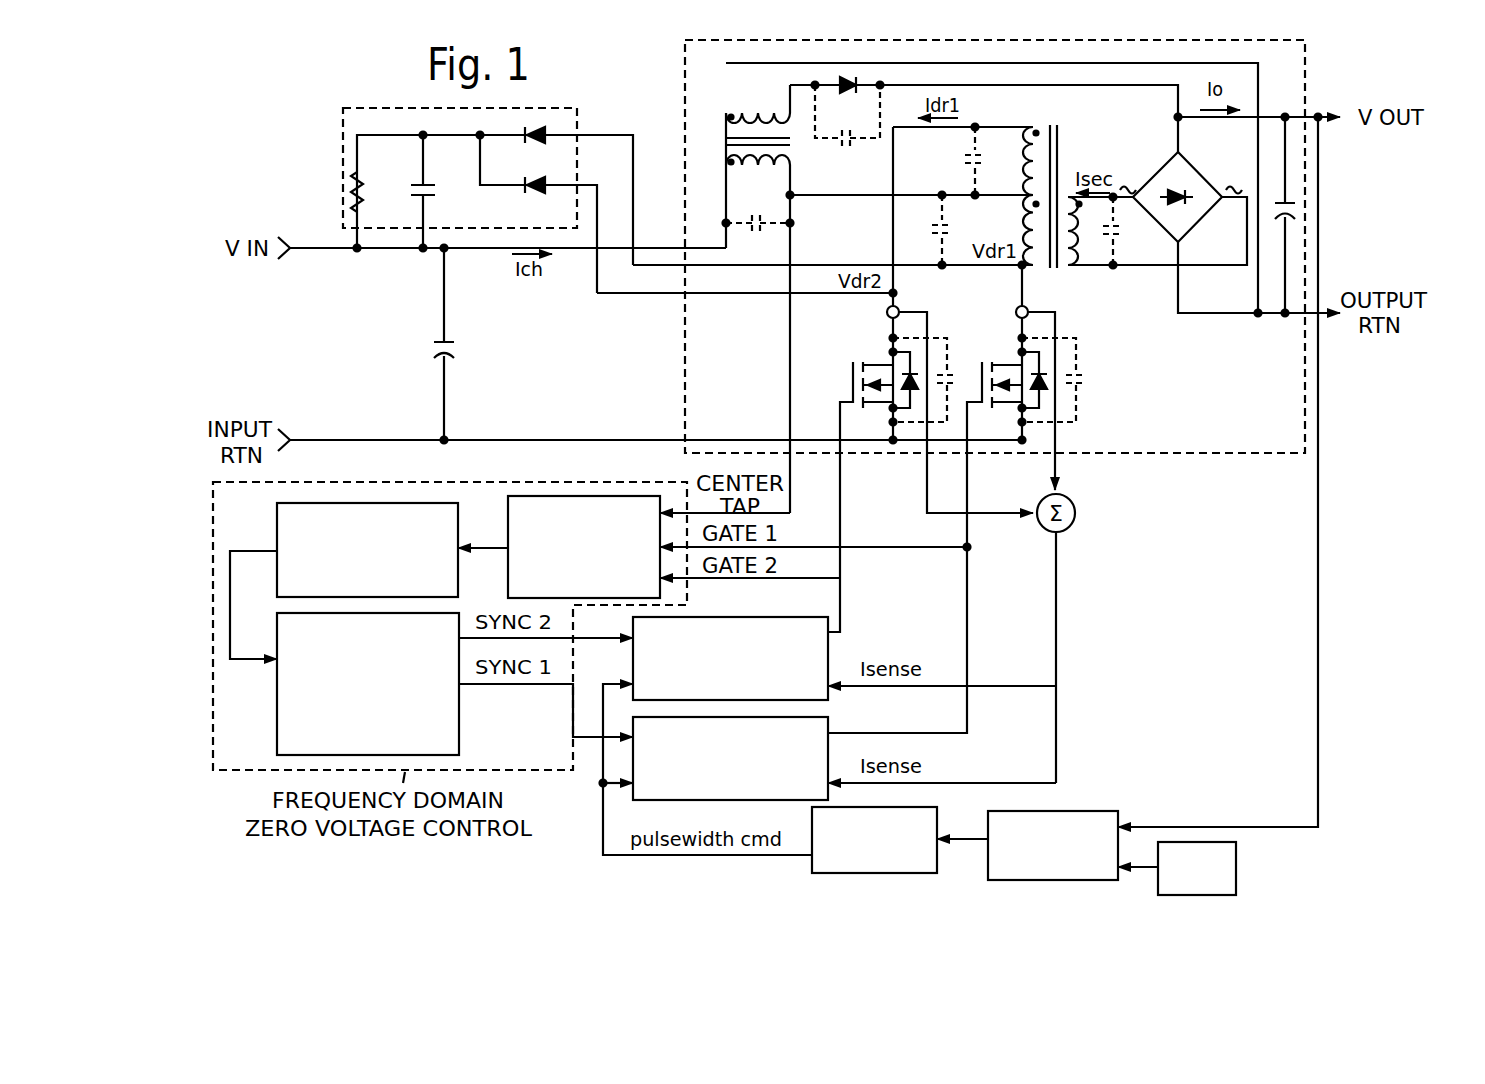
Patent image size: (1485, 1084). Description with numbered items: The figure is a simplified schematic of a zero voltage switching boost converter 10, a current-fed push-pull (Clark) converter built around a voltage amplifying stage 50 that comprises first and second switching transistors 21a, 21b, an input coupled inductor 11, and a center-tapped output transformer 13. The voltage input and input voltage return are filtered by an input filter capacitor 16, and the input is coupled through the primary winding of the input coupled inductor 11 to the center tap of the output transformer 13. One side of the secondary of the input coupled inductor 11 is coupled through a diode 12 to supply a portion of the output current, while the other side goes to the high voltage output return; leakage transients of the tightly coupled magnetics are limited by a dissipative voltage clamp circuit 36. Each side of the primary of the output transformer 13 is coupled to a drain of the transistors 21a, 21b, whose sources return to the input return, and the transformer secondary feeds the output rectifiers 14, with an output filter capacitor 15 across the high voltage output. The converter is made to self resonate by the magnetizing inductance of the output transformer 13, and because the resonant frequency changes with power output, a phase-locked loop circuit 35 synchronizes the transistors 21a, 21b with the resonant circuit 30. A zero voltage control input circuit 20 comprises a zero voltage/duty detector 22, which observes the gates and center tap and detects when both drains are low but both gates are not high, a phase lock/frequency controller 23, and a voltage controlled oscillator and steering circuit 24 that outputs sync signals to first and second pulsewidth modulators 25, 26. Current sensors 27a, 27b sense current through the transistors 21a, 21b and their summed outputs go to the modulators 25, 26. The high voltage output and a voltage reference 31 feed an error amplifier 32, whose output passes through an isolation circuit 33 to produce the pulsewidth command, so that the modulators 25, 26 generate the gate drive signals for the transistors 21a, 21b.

The zero voltage switching boost converter 10 is at (287, 96).
The input coupled inductor 11 is at (764, 162).
The diode 12 is at (841, 94).
The output transformer 13 is at (1058, 133).
The output rectifiers 14 is at (1200, 176).
The output filter capacitor 15 is at (1300, 206).
The input filter capacitor 16 is at (450, 346).
The zero voltage control input circuit 20 is at (226, 772).
The first switching transistor 21a is at (845, 360).
The second switching transistor 21b is at (988, 357).
The zero voltage/duty detector 22 is at (508, 538).
The phase lock/frequency controller 23 is at (277, 531).
The voltage controlled oscillator and steering circuit 24 is at (277, 700).
The first pulsewidth modulator 25 is at (633, 657).
The second pulsewidth modulator 26 is at (830, 726).
The first current sensor 27a is at (899, 309).
The second current sensor 27b is at (1028, 309).
The resonant circuit 30 is at (1125, 306).
The voltage reference 31 is at (1236, 872).
The error amplifier 32 is at (1094, 813).
The isolation circuit 33 is at (937, 812).
The phase-locked loop circuit 35 is at (668, 342).
The dissipative voltage clamp circuit 36 is at (343, 164).
The voltage amplifying stage 50 is at (1141, 458).